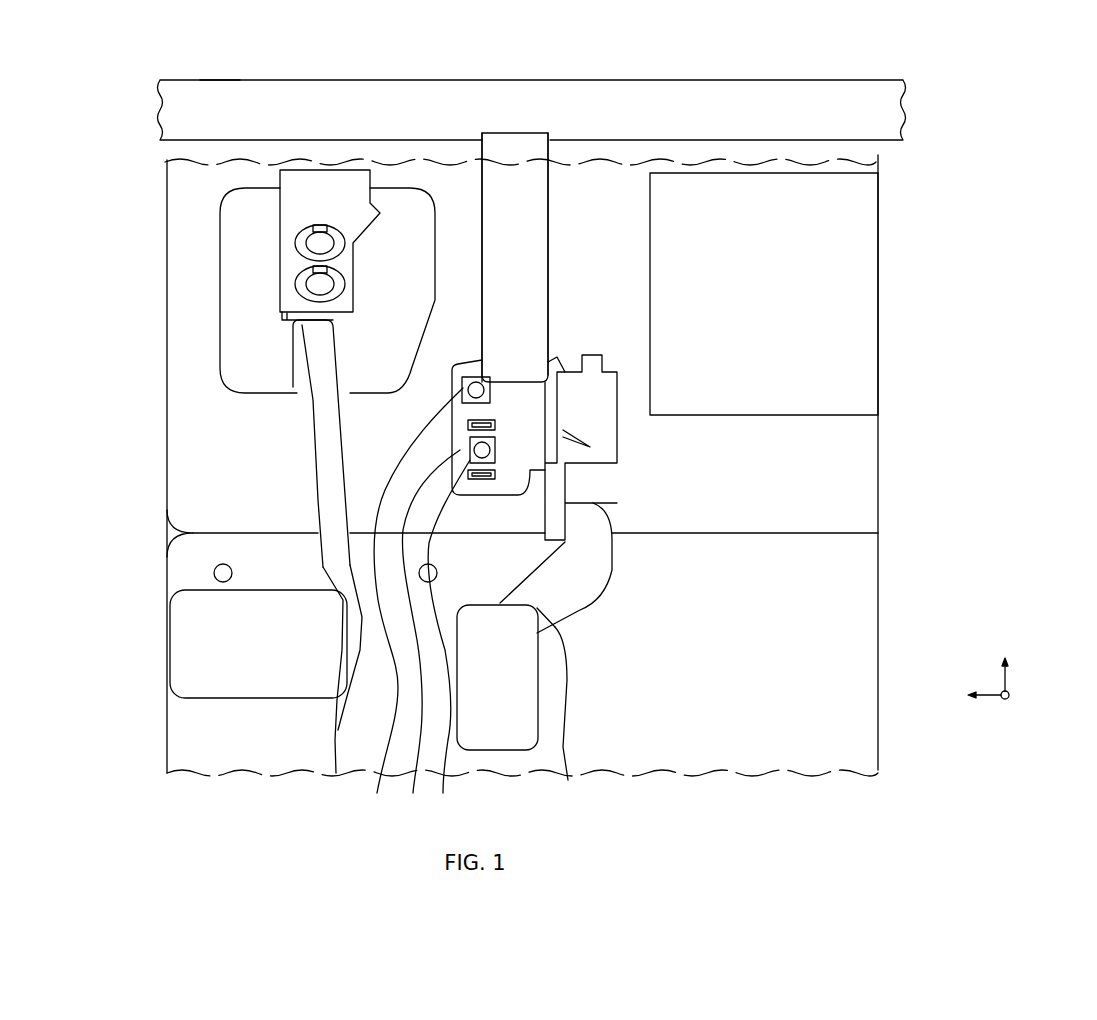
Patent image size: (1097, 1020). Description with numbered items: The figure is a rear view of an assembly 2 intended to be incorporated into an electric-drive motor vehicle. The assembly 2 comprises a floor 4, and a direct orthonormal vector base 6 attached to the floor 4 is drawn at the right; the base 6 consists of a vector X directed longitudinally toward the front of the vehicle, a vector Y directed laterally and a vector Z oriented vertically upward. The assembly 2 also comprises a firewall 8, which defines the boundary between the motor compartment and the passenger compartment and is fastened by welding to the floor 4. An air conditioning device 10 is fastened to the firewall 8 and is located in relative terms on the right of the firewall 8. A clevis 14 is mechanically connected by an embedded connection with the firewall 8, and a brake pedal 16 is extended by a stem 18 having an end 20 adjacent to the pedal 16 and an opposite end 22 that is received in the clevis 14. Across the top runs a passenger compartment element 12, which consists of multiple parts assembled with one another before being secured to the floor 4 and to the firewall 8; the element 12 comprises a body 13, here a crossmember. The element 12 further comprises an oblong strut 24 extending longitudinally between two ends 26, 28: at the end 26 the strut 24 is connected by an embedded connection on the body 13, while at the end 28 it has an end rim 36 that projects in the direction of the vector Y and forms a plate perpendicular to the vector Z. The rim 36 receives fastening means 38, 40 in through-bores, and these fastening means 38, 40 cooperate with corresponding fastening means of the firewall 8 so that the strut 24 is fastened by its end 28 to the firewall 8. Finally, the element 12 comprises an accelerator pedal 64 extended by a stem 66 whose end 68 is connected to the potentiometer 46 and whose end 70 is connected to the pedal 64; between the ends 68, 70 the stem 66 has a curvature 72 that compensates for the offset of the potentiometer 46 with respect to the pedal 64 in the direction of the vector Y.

The assembly 2 is at (897, 337).
The floor 4 is at (759, 719).
The direct orthonormal vector base 6 is at (1040, 673).
The firewall 8 is at (757, 484).
The air conditioning device 10 is at (748, 304).
The passenger compartment element 12 is at (412, 80).
The body 13 is at (220, 80).
The clevis 14 is at (325, 188).
The brake pedal 16 is at (191, 588).
The stem 18 is at (307, 442).
The end 20 is at (336, 773).
The end 22 is at (307, 328).
The strut 24 is at (523, 218).
The end 26 is at (517, 133).
The end 28 is at (523, 325).
The end rim 36 is at (428, 633).
The fastening means 38 is at (414, 602).
The fastening means 40 is at (444, 638).
The potentiometer 46 is at (598, 423).
The accelerator pedal 64 is at (539, 731).
The stem 66 is at (580, 610).
The end 68 is at (612, 523).
The end 70 is at (568, 780).
The curvature 72 is at (612, 570).